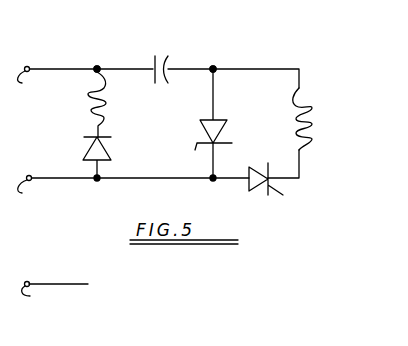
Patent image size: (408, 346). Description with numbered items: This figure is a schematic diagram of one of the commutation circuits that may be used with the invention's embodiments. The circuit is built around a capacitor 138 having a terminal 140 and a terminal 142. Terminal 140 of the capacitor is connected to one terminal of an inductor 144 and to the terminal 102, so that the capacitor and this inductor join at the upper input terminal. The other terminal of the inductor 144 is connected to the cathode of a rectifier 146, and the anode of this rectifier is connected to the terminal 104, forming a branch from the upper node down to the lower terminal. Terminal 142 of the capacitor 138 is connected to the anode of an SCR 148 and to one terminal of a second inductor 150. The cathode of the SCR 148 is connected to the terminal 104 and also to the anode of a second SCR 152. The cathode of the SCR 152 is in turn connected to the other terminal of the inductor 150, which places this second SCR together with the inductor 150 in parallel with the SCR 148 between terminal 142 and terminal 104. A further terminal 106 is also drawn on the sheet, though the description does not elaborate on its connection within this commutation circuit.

The terminal 102 is at (40, 85).
The terminal 104 is at (39, 197).
The terminal 106 is at (55, 299).
The capacitor 138 is at (172, 43).
The terminal 140 is at (151, 63).
The terminal 142 is at (172, 63).
The inductor 144 is at (108, 104).
The rectifier 146 is at (112, 150).
The SCR 148 is at (222, 132).
The second inductor 150 is at (306, 114).
The second SCR 152 is at (255, 191).